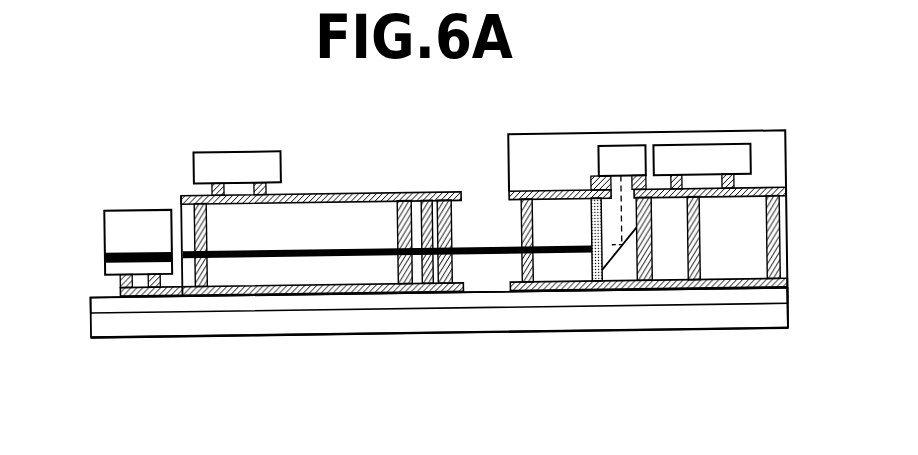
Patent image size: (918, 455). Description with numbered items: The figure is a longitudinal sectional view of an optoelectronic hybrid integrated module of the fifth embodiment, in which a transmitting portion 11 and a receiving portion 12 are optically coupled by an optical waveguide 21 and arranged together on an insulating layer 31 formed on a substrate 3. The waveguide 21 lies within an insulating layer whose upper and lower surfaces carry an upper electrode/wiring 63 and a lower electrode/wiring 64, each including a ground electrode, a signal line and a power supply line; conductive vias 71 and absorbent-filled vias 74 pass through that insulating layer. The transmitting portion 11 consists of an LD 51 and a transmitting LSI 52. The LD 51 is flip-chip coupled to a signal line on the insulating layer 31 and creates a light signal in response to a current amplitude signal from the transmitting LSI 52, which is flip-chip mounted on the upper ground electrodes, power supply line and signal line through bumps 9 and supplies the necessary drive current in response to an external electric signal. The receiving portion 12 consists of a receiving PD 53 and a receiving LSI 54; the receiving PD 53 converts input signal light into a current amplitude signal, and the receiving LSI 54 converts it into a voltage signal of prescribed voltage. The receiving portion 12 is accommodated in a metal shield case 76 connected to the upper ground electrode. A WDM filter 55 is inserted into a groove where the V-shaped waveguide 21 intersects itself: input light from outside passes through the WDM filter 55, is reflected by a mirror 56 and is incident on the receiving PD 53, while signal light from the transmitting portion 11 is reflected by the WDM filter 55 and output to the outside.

The substrate 3 is at (493, 323).
The insulating layer 31 is at (748, 297).
The bumps 9 is at (212, 188).
The transmitting portion 11 is at (265, 100).
The receiving portion 12 is at (750, 75).
The optical waveguide 21 is at (318, 247).
The LD 51 is at (110, 231).
The transmitting LSI 52 is at (250, 152).
The receiving PD 53 is at (613, 147).
The receiving LSI 54 is at (730, 147).
The WDM filter 55 is at (601, 252).
The mirror 56 is at (616, 262).
The upper electrode/wiring 63 is at (773, 187).
The lower electrode/wiring 64 is at (787, 294).
The conductive vias 71 is at (212, 268).
The absorbent-filled vias 74 is at (400, 228).
The metal shield case 76 is at (775, 142).